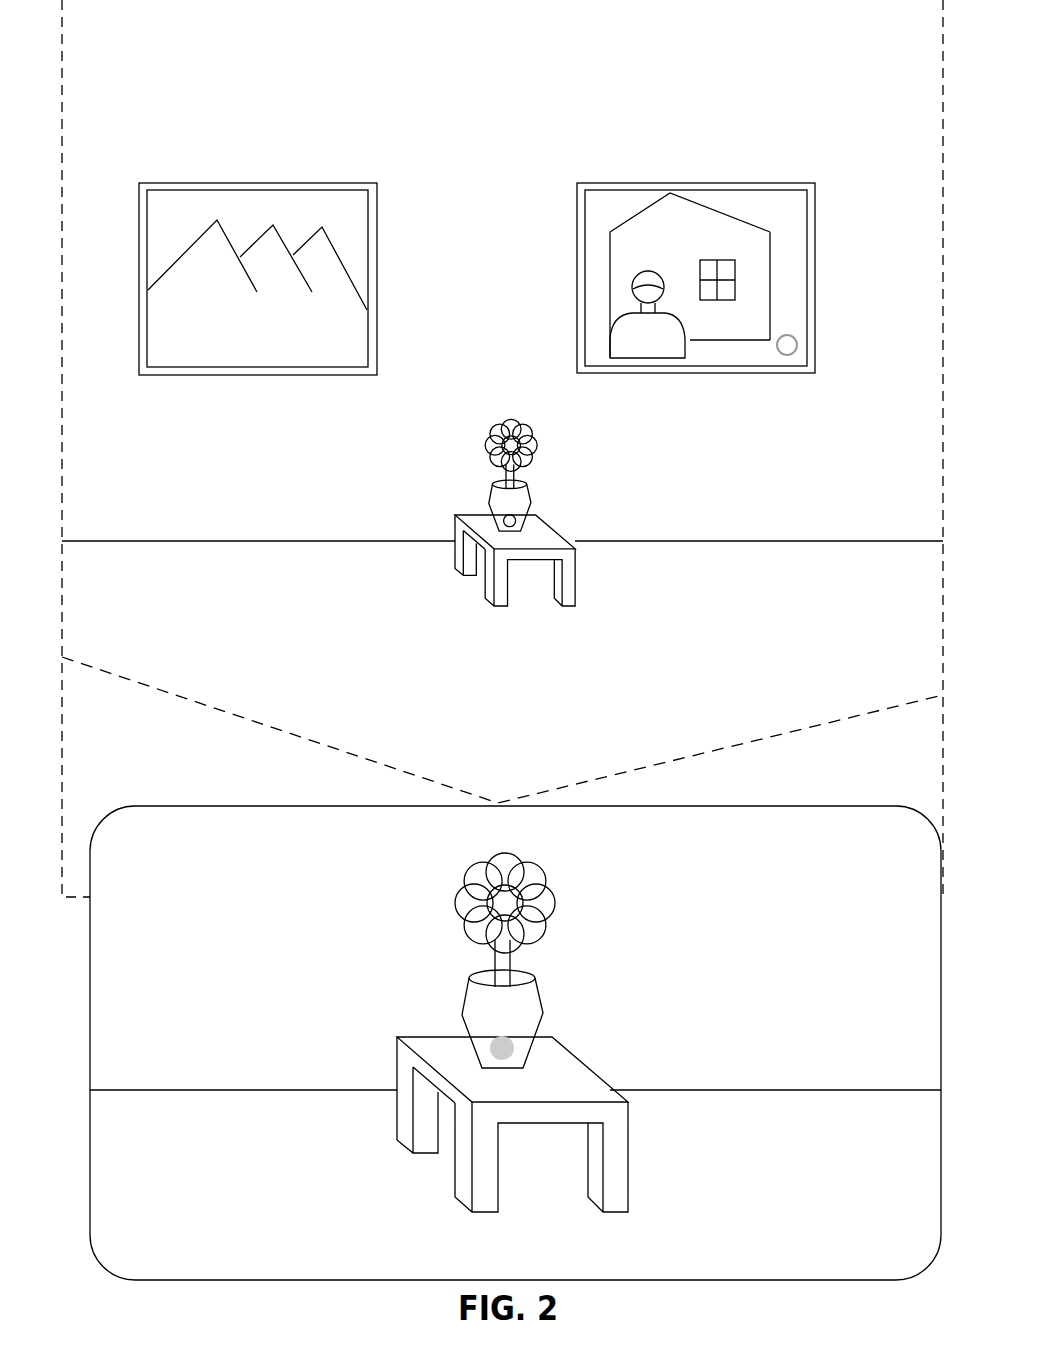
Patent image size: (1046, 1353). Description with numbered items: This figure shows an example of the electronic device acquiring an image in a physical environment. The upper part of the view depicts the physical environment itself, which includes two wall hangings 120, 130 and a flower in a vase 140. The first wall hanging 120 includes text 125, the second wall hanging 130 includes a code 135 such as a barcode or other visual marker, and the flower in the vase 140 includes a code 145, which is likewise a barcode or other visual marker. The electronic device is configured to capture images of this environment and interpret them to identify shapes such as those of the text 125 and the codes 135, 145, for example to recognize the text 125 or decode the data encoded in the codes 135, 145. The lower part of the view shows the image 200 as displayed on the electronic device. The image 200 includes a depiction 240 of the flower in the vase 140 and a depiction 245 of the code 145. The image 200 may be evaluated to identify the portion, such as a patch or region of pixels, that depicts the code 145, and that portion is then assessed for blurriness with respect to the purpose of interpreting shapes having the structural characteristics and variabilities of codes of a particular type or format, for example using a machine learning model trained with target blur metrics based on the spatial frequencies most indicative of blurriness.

The first wall hanging 120 is at (153, 182).
The text 125 is at (180, 363).
The second wall hanging 130 is at (797, 182).
The code 135 is at (765, 373).
The flower in a vase 140 is at (537, 435).
The code 145 is at (528, 517).
The image 200 is at (515, 1043).
The depiction of the flower in the vase 240 is at (548, 893).
The depiction of the code 245 is at (535, 1047).